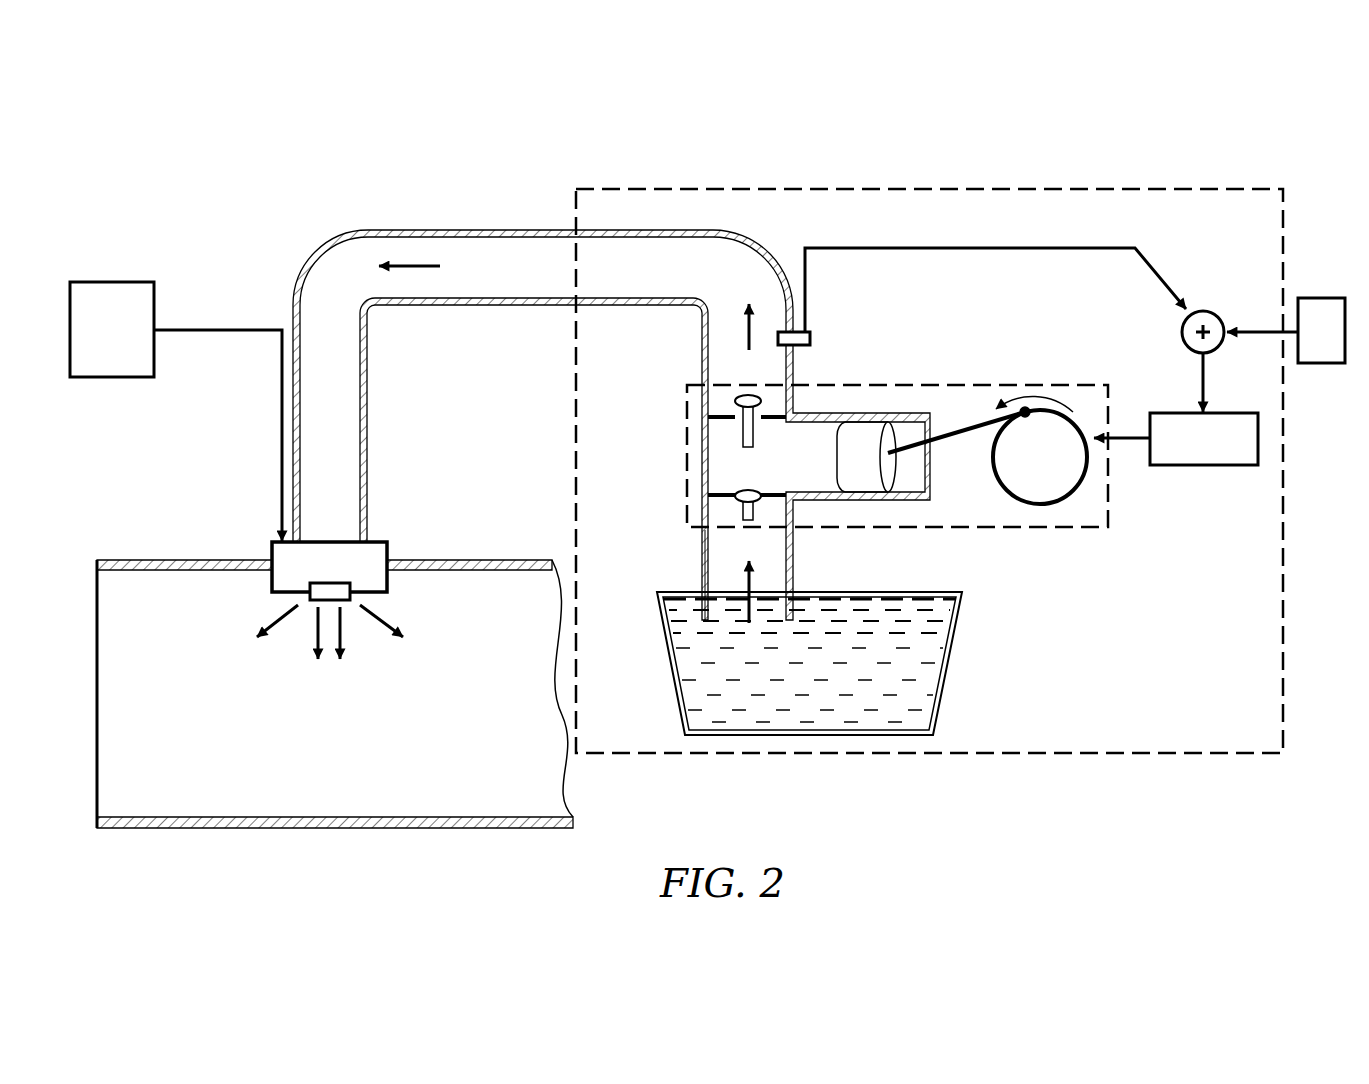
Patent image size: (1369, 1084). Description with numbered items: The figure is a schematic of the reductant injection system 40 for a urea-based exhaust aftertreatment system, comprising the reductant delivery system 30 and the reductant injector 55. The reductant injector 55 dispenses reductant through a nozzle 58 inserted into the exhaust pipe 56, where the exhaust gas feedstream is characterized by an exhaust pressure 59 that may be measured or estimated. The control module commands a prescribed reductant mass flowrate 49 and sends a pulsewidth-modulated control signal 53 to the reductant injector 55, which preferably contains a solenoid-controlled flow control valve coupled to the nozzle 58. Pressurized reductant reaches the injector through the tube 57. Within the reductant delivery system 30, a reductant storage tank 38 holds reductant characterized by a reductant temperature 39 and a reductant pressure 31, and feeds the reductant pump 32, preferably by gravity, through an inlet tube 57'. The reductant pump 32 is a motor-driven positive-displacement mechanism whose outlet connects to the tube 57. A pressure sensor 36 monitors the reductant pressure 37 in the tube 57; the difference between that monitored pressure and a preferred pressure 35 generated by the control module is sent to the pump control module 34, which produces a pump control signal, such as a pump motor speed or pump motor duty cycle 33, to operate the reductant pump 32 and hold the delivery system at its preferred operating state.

The reductant delivery system 30 is at (1245, 234).
The reductant pressure 31 is at (761, 559).
The reductant pump 32 is at (1040, 384).
The pump motor duty cycle 33 is at (1101, 522).
The pump control module 34 is at (1218, 453).
The preferred pressure 35 is at (1278, 327).
The pressure sensor 36 is at (812, 338).
The reductant pressure 37 is at (933, 244).
The reductant storage tank 38 is at (950, 665).
The reductant temperature 39 is at (856, 671).
The reductant injection system 40 is at (345, 206).
The prescribed reductant mass flowrate 49 is at (470, 280).
The pulsewidth-modulated control signal 53 is at (224, 324).
The reductant injector 55 is at (389, 550).
The exhaust pipe 56 is at (178, 560).
The tube 57 is at (534, 459).
The inlet tube 57' is at (672, 569).
The nozzle 58 is at (338, 590).
The exhaust pressure 59 is at (195, 707).